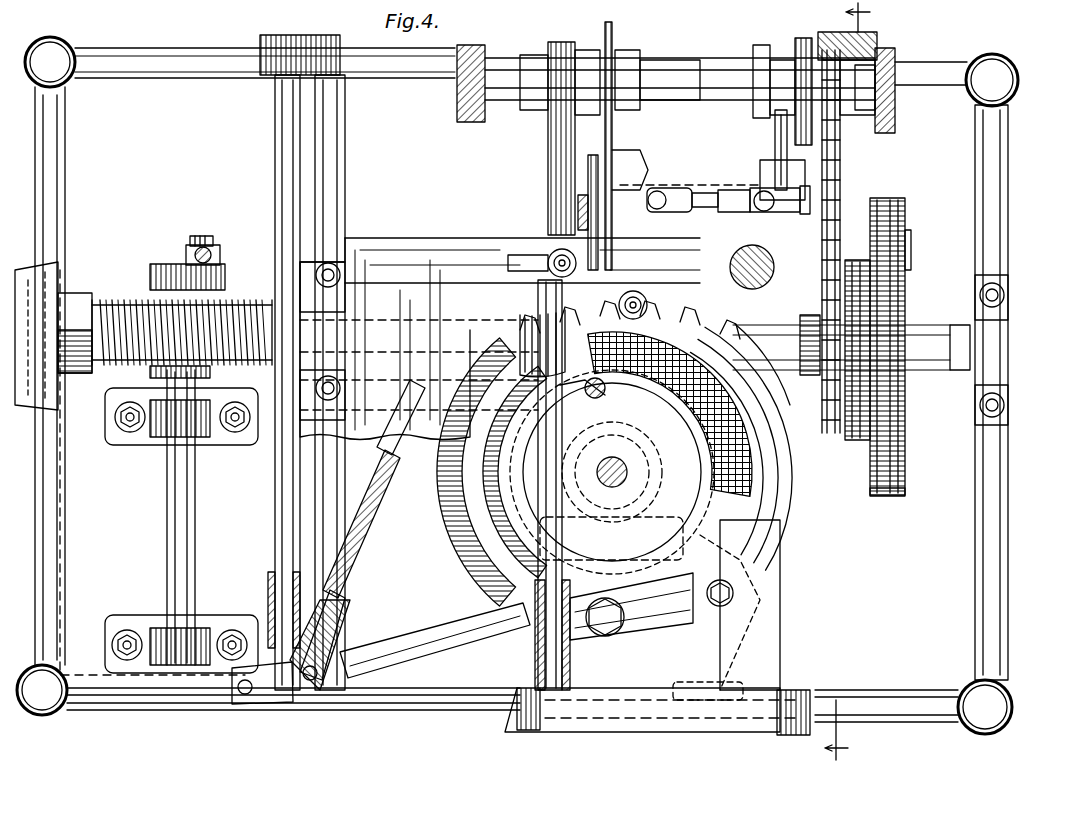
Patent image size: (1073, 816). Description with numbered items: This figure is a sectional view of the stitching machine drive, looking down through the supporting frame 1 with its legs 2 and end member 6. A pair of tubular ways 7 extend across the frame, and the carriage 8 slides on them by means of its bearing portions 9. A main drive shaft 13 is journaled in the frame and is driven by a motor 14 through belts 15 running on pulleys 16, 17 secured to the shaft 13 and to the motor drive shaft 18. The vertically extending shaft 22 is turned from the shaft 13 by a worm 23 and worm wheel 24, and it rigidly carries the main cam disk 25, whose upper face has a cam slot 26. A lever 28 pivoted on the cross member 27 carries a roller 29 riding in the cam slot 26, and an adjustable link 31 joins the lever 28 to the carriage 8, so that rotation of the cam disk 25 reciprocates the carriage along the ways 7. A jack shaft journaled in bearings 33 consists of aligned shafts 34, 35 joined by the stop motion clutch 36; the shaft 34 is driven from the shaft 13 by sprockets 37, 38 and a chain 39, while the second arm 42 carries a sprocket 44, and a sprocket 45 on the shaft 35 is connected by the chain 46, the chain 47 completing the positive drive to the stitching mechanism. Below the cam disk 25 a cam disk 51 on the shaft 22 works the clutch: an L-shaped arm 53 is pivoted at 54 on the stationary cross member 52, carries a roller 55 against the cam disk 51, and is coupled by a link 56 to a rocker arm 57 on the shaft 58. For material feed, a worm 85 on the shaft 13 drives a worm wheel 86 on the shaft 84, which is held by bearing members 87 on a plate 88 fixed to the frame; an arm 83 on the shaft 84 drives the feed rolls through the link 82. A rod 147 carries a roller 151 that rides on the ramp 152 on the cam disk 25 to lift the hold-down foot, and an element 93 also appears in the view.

The supporting frame 1 is at (1008, 228).
The legs 2 is at (1020, 80).
The end member 6 is at (687, 391).
The tubular ways 7 is at (278, 482).
The carriage 8 is at (391, 281).
The bearing portions 9 is at (272, 278).
The main drive shaft 13 is at (380, 238).
The motor 14 is at (865, 225).
The belts 15 is at (880, 497).
The pulley 16 is at (905, 428).
The pulley 17 is at (911, 258).
The motor drive shaft 18 is at (906, 228).
The vertically extending shaft 22 is at (616, 457).
The worm 23 is at (675, 396).
The worm wheel 24 is at (690, 412).
The main cam disk 25 is at (770, 462).
The cam slot 26 is at (748, 492).
The cross member 27 is at (780, 580).
The lever 28 is at (426, 627).
The roller 29 is at (660, 652).
The adjustable link 31 is at (360, 548).
The bearings 33 is at (485, 52).
The shaft 34 is at (862, 115).
The shaft 35 is at (703, 62).
The stop motion mechanism clutch 36 is at (790, 35).
The sprocket 37 is at (828, 32).
The sprocket 38 is at (830, 435).
The chain 39 is at (840, 190).
The second arm 42 is at (548, 136).
The sprocket 44 is at (588, 170).
The sprocket 45 is at (612, 36).
The chain 46 is at (605, 38).
The chain 47 is at (578, 200).
The cam disk 51 is at (768, 420).
The stationary cross member 52 is at (459, 233).
The L-shaped arm 53 is at (640, 295).
The pivotal connection 54 is at (550, 256).
The roller 55 is at (770, 305).
The link 56 is at (740, 190).
The rocker arm 57 is at (790, 187).
The shaft 58 is at (775, 135).
The link 82 is at (210, 252).
The arm 83 is at (166, 264).
The shaft 84 is at (272, 300).
The worm 85 is at (92, 318).
The worm wheel 86 is at (98, 300).
The bearing members 87 is at (147, 445).
The plate 88 is at (60, 518).
The lever 93 is at (614, 185).
The vertically extending rod 147 is at (520, 330).
The roller 151 is at (560, 390).
The ramp or cam 152 is at (468, 552).